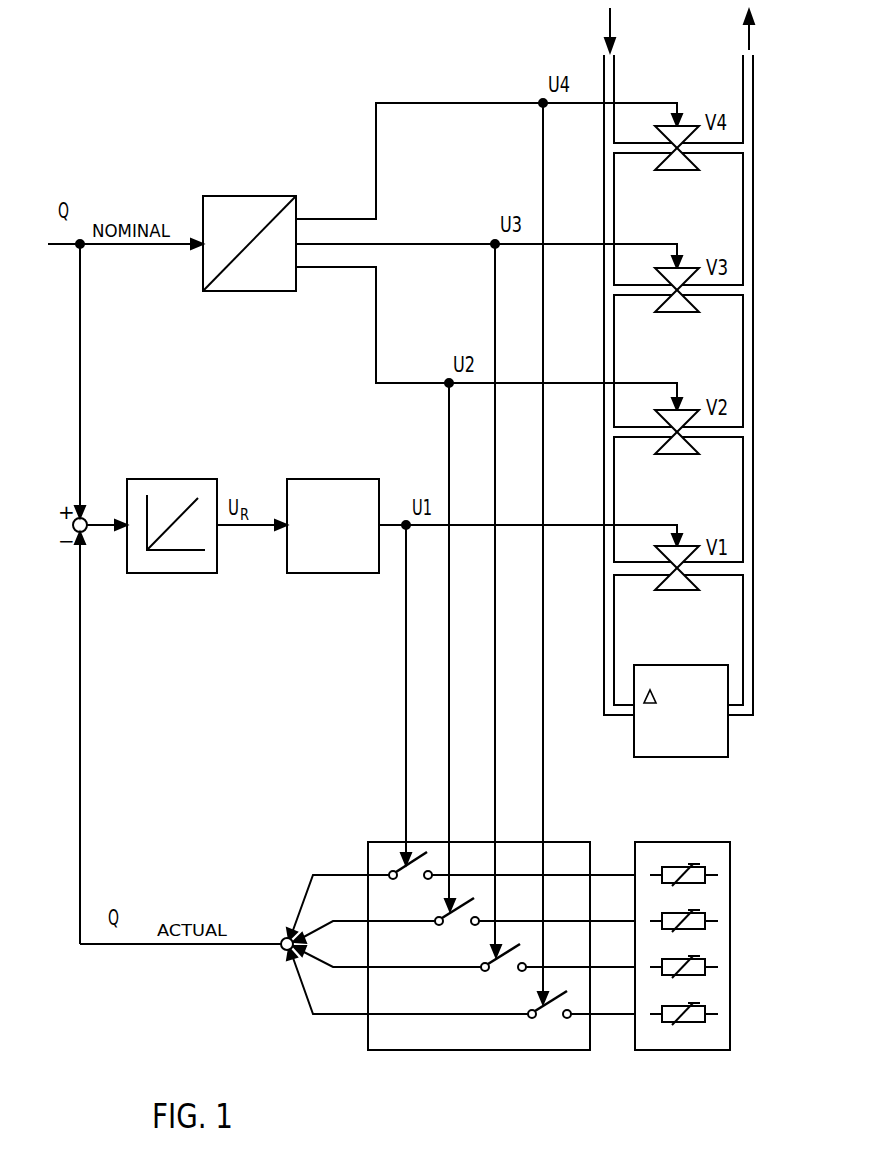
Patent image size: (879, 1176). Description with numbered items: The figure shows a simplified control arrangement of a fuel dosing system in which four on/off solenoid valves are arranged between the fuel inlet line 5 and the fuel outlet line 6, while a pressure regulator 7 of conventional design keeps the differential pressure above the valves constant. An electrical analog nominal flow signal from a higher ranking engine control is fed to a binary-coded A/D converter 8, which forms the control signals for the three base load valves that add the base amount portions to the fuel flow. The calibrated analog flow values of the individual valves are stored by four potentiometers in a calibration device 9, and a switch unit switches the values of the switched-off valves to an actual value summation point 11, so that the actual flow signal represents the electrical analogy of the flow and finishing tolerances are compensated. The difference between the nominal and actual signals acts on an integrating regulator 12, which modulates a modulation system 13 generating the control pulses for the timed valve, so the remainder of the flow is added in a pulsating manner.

The fuel inlet line 5 is at (614, 67).
The fuel outlet line 6 is at (743, 67).
The pressure regulator 7 is at (683, 757).
The A/D converter 8 is at (250, 291).
The calibration device 9 is at (698, 1050).
The actual value summation point 11 is at (524, 1050).
The integrating regulator 12 is at (177, 573).
The modulation system 13 is at (330, 573).